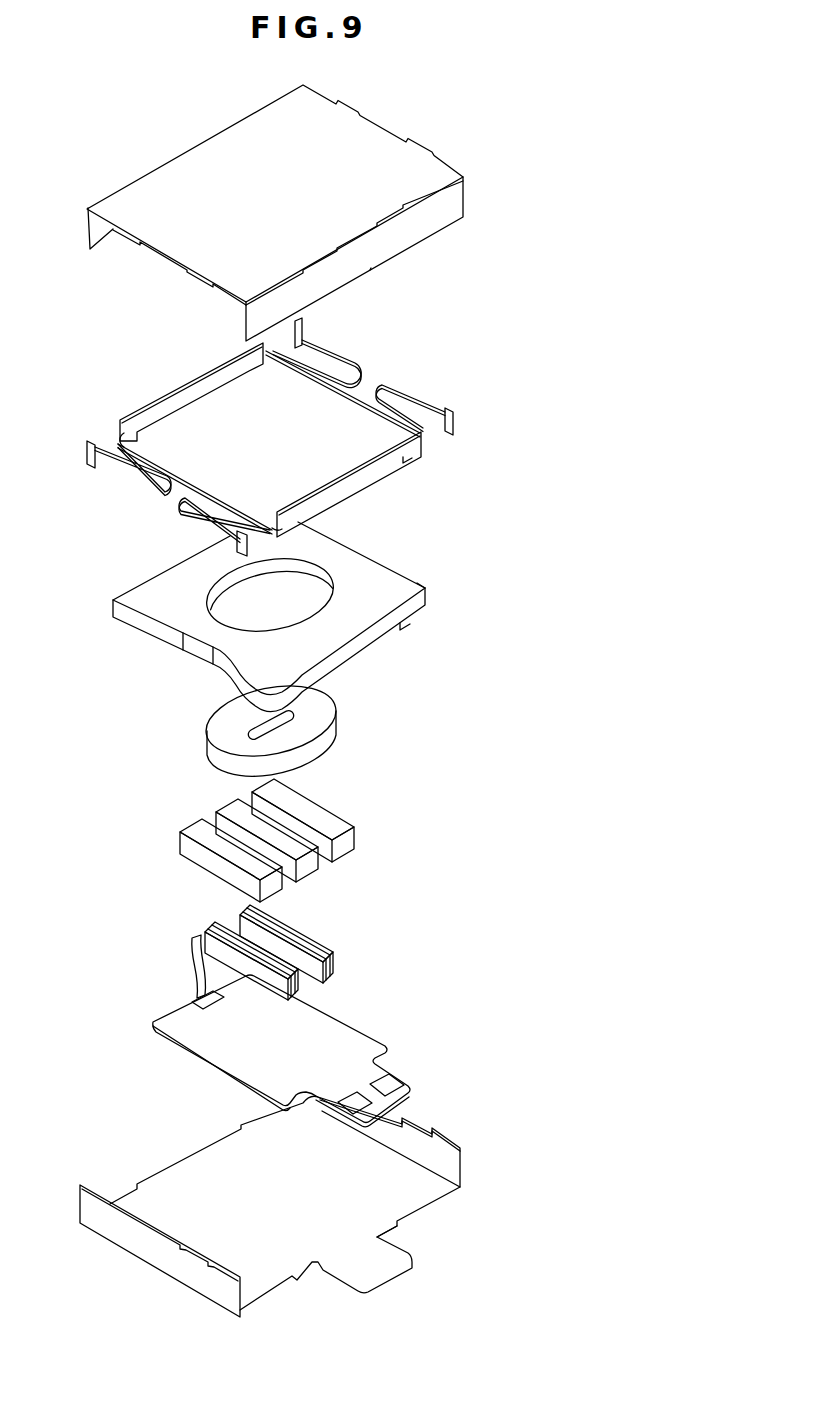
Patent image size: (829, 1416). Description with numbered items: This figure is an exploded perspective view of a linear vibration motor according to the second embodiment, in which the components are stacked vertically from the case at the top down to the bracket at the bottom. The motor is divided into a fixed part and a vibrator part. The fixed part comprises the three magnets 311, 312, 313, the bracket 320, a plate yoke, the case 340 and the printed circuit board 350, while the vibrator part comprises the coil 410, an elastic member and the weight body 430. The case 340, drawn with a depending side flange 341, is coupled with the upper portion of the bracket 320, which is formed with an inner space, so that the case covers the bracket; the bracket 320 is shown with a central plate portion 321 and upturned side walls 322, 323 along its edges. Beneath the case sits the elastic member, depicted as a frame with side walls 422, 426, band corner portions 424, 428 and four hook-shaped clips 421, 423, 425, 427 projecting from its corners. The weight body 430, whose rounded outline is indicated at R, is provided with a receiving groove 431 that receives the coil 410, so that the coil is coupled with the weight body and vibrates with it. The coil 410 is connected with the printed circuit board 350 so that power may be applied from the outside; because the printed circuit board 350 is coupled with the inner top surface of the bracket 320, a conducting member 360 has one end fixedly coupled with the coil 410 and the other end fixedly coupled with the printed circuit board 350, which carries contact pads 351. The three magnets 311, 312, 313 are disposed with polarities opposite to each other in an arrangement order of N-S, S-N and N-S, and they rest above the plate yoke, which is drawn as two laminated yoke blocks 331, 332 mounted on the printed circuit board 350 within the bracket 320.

The case 340 is at (498, 179).
The cover side flange 341 is at (370, 270).
The hook clip 421 is at (442, 391).
The frame side wall 422 is at (356, 478).
The hook clip 423 is at (206, 520).
The frame band corner 424 is at (268, 526).
The hook clip 425 is at (366, 348).
The frame side wall 426 is at (176, 394).
The hook clip 427 is at (124, 478).
The frame band corner 428 is at (118, 444).
The weight body 430 is at (418, 560).
The rounded region R is at (426, 590).
The receiving groove 431 is at (273, 603).
The coil 410 is at (360, 718).
The magnet 311 is at (266, 862).
The magnet 312 is at (322, 833).
The magnet 313 is at (342, 816).
The coil 331 is at (300, 985).
The coil 332 is at (330, 943).
The conducting member 360 is at (190, 962).
The printed circuit board 350 is at (413, 1050).
The contact pad 351 is at (396, 1087).
The bracket 320 is at (440, 1112).
The base tab 321 is at (396, 1253).
The base side wall 322 is at (166, 1255).
The base side wall 323 is at (446, 1147).